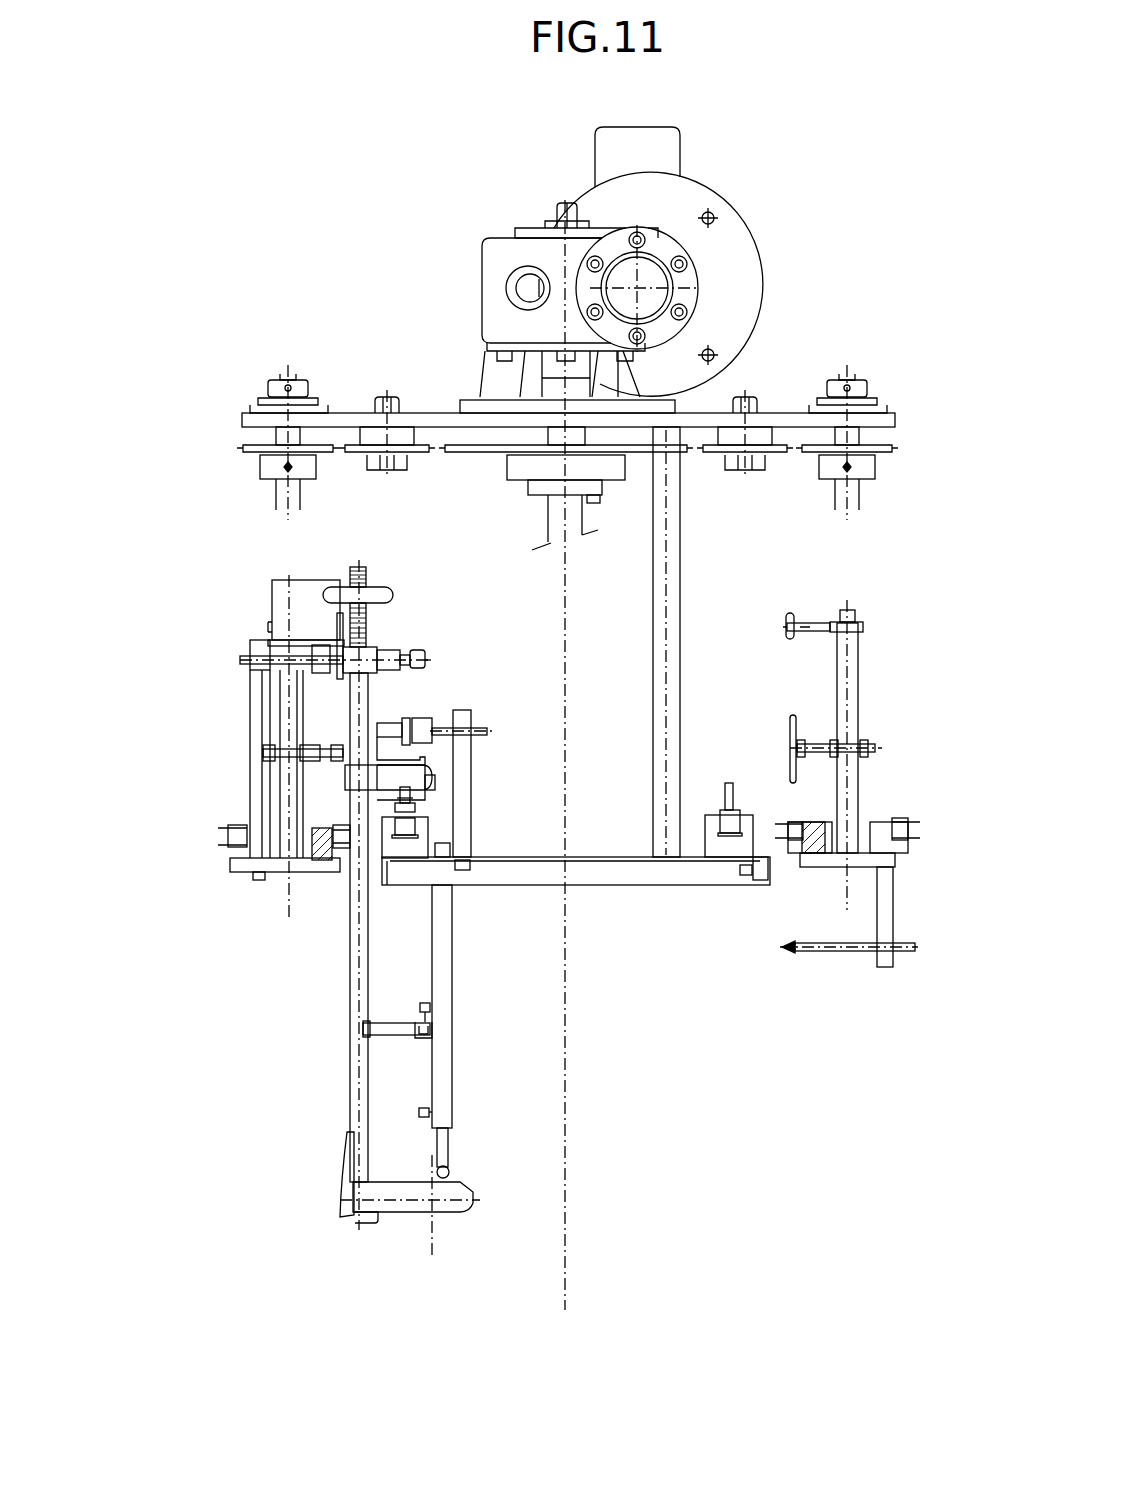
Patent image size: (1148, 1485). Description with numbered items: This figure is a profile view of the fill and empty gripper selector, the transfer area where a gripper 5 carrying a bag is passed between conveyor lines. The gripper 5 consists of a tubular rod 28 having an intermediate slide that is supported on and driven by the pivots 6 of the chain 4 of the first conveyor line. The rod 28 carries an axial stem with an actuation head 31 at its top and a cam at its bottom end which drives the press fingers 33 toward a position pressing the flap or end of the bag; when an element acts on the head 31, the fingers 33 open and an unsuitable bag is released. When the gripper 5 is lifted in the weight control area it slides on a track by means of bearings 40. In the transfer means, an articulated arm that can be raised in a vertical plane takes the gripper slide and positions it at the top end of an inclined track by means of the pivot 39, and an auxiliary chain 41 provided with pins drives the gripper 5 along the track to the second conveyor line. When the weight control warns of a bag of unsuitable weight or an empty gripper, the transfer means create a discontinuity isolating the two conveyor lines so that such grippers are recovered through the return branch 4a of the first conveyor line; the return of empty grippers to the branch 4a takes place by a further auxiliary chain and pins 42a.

The chain 4 is at (403, 834).
The return branch 4a is at (727, 832).
The gripper 5 is at (347, 987).
The pivots 6 is at (407, 798).
The tubular rod 28 is at (355, 1070).
The actuation head 31 is at (378, 592).
The press fingers 33 is at (413, 1203).
The pivot 39 is at (407, 652).
The bearings 40 is at (405, 718).
The auxiliary chain 41 is at (228, 836).
The pins 42a is at (355, 825).